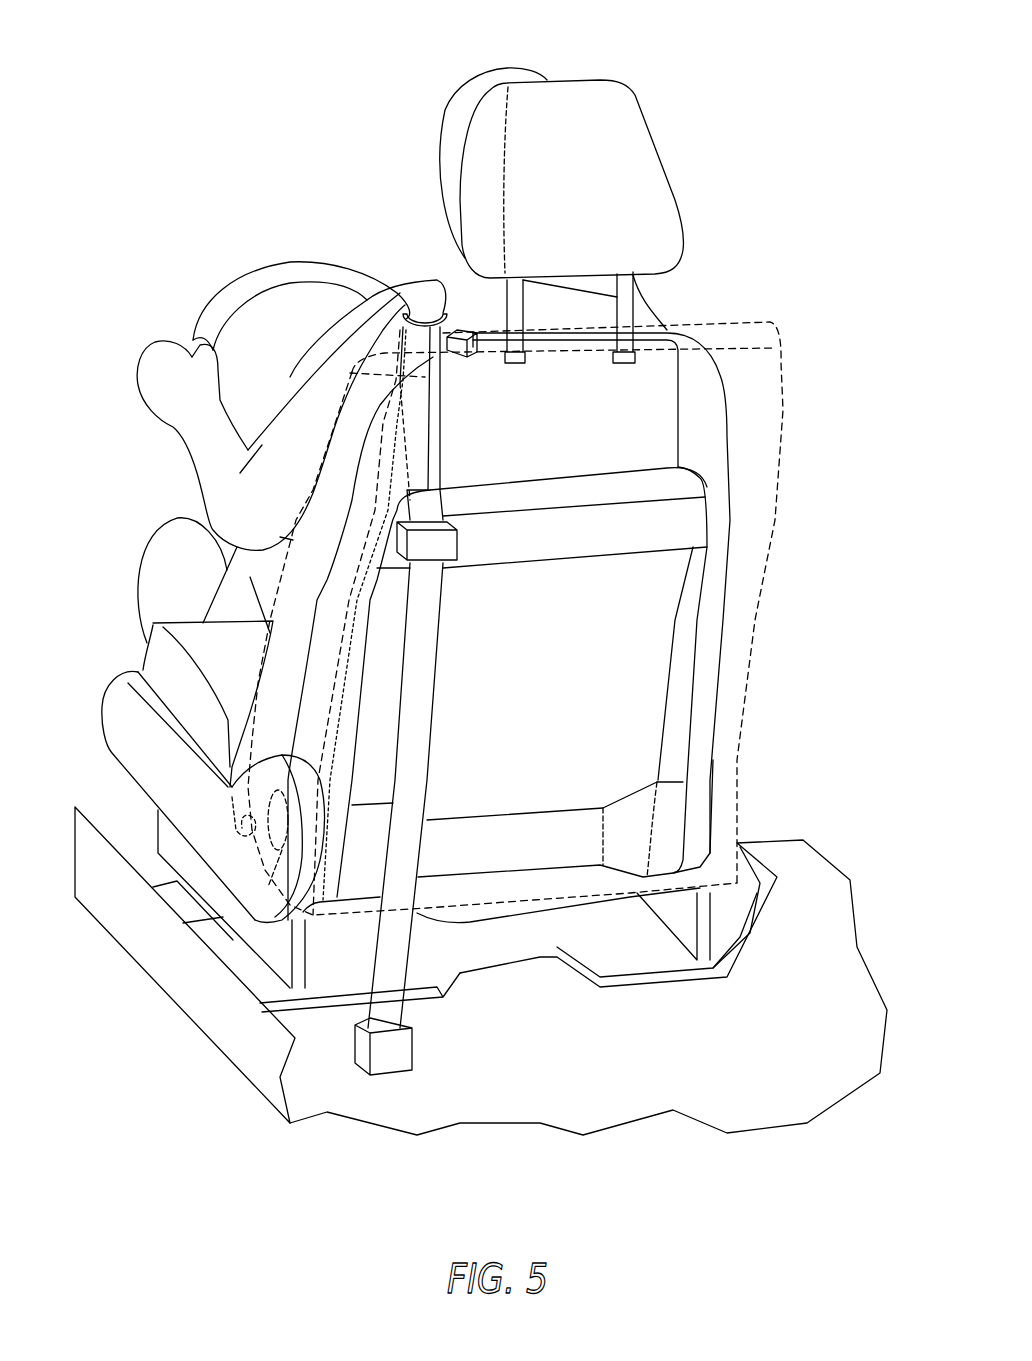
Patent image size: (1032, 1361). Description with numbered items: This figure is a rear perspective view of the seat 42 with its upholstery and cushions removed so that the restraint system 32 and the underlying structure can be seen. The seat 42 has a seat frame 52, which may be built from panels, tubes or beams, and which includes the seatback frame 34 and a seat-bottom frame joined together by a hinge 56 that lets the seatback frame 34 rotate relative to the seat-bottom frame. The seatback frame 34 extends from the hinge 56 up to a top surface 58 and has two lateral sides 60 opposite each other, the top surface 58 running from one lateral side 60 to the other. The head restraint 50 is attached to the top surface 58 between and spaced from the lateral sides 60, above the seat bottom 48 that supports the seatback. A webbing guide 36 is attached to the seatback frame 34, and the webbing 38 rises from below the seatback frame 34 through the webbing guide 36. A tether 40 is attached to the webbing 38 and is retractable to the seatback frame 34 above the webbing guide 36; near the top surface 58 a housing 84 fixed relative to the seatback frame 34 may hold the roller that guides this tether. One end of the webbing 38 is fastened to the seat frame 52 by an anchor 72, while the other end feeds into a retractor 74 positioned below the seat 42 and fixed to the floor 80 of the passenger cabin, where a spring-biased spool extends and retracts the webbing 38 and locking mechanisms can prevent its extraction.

The restraint system 32 is at (310, 155).
The seatback frame 34 is at (730, 433).
The webbing guide 36 is at (460, 547).
The webbing 38 is at (445, 672).
The tether 40 is at (463, 325).
The seat 42 is at (97, 690).
The seat bottom 48 is at (108, 753).
The head restraint 50 is at (605, 80).
The seat frame 52 is at (743, 745).
The hinge 56 is at (278, 839).
The top surface 58 is at (727, 323).
The lateral sides 60 is at (290, 677).
The anchor 72 is at (230, 823).
The retractor 74 is at (413, 1037).
The floor 80 is at (746, 1056).
The housing 84 is at (467, 353).